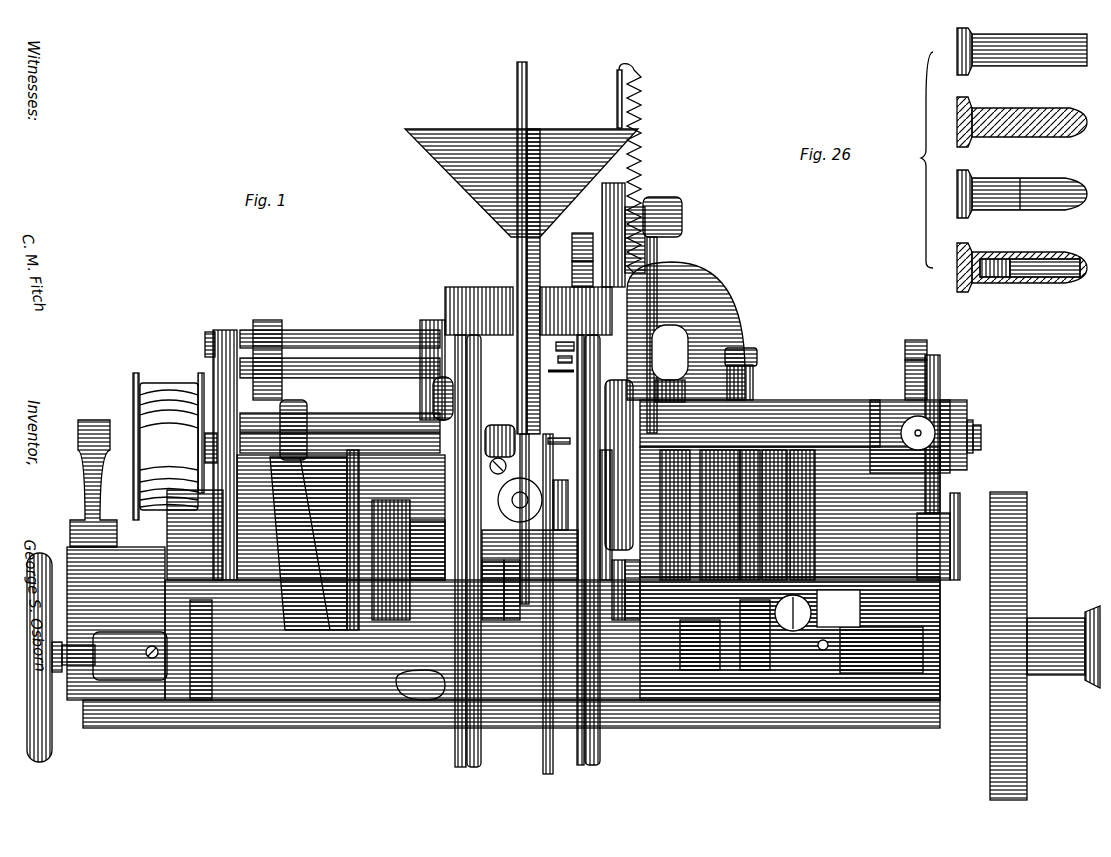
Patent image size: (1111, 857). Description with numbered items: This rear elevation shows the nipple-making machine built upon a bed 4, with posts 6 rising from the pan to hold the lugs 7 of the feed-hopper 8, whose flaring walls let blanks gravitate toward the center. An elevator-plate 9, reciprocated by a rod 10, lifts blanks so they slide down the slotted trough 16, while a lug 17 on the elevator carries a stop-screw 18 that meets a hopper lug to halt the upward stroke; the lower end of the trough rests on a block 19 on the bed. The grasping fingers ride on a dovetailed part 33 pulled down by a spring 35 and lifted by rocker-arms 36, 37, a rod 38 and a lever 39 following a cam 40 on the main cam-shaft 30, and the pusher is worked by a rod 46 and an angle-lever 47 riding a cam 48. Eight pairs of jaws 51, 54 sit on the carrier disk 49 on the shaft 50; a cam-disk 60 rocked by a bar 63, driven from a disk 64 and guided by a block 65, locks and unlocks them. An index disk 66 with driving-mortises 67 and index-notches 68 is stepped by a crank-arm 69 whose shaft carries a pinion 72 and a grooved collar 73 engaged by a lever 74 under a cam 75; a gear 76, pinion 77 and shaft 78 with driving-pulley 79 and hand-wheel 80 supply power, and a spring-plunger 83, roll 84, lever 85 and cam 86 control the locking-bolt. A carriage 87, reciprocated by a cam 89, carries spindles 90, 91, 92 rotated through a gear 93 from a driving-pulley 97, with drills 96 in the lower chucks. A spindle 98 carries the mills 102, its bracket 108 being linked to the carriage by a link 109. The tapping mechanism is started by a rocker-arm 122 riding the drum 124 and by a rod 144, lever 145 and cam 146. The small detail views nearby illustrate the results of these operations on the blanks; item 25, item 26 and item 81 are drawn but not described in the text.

The bed 4 is at (262, 700).
The posts 6 is at (466, 762).
The lugs 7 is at (522, 280).
The feed-hopper 8 is at (470, 175).
The elevator-plate 9 is at (522, 604).
The rod 10 is at (552, 770).
The trough 16 is at (517, 88).
The lug 17 is at (496, 620).
The stop-screw 18 is at (512, 620).
The block 19 is at (665, 284).
The pawl 25 is at (578, 236).
The pawl pin 26 is at (575, 270).
The main cam-shaft 30 is at (240, 580).
The dovetailed part 33 is at (612, 174).
The spring 35 is at (618, 96).
The rocker-arm 36 is at (640, 207).
The rocker-arm 37 is at (665, 200).
The rod 38 is at (657, 252).
The lever 39 is at (672, 400).
The cam 40 is at (678, 580).
The rod 46 is at (748, 356).
The angle-lever 47 is at (737, 394).
The cam 48 is at (720, 580).
The carrier disk 49 is at (566, 348).
The shaft 50 is at (973, 438).
The jaws 51 is at (572, 362).
The jaws 54 is at (574, 372).
The cam-disk 60 is at (620, 382).
The bar 63 is at (633, 620).
The disk 64 is at (606, 580).
The guiding-block 65 is at (620, 620).
The disk 66 is at (914, 340).
The driving-mortises 67 is at (932, 356).
The index-notches 68 is at (905, 362).
The crank-arm 69 is at (952, 500).
The pinion 72 is at (778, 462).
The grooved collar 73 is at (800, 486).
The lever 74 is at (793, 631).
The cam 75 is at (822, 675).
The gear 76 is at (752, 456).
The pinion 77 is at (758, 670).
The shaft 78 is at (700, 670).
The driving-pulley 79 is at (1010, 556).
The hand-wheel 80 is at (50, 725).
The housing 81 is at (900, 402).
The spring-plunger 83 is at (922, 420).
The roll 84 is at (950, 426).
The lever 85 is at (981, 448).
The cam 86 is at (951, 518).
The carriage 87 is at (340, 424).
The cam 89 is at (305, 630).
The spindle 90 is at (340, 340).
The spindle 91 is at (396, 360).
The spindle 92 is at (393, 440).
The gear 93 is at (205, 395).
The drills 96 is at (556, 444).
The driving-pulley 97 is at (144, 380).
The spindle 98 is at (535, 492).
The mills 102 is at (560, 500).
The bracket 108 is at (505, 464).
The link 109 is at (498, 426).
The rocker-arm 122 is at (190, 580).
The drum 124 is at (205, 700).
The rod 144 is at (412, 700).
The lever 145 is at (390, 620).
The cam 146 is at (353, 630).